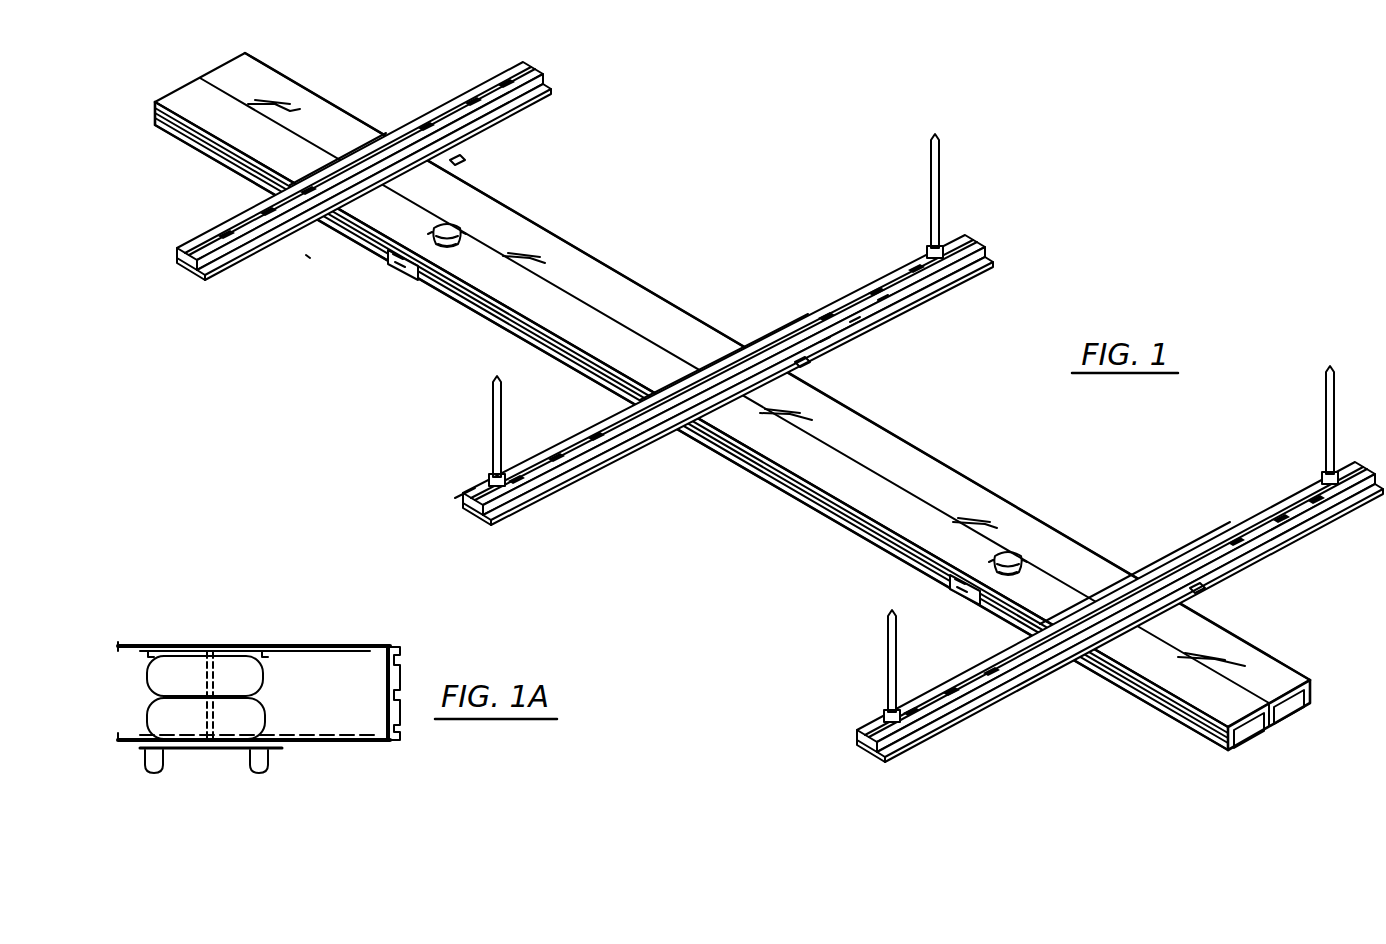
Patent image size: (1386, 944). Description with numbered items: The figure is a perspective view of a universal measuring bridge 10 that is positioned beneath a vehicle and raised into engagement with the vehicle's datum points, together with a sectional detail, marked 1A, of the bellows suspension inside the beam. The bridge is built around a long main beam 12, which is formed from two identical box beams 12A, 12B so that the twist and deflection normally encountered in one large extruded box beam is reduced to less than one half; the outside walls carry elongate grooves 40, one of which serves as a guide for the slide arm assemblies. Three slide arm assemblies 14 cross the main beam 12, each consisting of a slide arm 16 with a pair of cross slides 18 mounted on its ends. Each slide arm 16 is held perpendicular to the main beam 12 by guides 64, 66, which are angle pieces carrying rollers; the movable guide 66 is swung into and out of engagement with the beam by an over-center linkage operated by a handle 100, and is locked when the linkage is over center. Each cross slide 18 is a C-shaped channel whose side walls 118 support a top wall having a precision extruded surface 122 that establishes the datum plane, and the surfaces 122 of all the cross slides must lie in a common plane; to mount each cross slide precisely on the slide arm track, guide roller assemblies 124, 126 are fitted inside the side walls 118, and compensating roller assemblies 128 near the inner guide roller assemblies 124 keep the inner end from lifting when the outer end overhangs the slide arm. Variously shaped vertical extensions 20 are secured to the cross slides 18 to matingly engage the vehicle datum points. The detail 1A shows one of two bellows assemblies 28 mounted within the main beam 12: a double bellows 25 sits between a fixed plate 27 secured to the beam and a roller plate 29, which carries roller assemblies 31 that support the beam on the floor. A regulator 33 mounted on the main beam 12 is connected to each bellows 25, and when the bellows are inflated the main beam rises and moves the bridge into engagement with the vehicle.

In FIG. 1, the universal measuring bridge 10 is at (726, 102).
In FIG. 1, the main beam 12 is at (764, 402).
In FIG. 1, the box beam 12A is at (1240, 662).
In FIG. 1A, the box beam 12A is at (397, 642).
In FIG. 1, the box beam 12B is at (1202, 707).
In FIG. 1A, the box beam 12B is at (168, 647).
In FIG. 1, the slide arm assembly 14 is at (761, 410).
In FIG. 1, the slide arm 16 is at (190, 272).
In FIG. 1, the cross slide 18 is at (486, 77).
In FIG. 1, the vertical extension 20 is at (940, 162).
In FIG. 1A, the double bellows 25 is at (258, 685).
In FIG. 1A, the fixed plate 27 is at (302, 647).
In FIG. 1, the bellows assembly 28 is at (486, 228).
In FIG. 1A, the bellows assembly 28 is at (294, 678).
In FIG. 1A, the roller plate 29 is at (272, 748).
In FIG. 1A, the roller assembly 31 is at (250, 773).
In FIG. 1, the regulator 33 is at (400, 273).
In FIG. 1, the elongate groove 40 is at (1315, 687).
In FIG. 1, the guide 64 is at (460, 162).
In FIG. 1, the movable guide 66 is at (338, 228).
In FIG. 1, the handle 100 is at (242, 270).
In FIG. 1, the side wall 118 is at (458, 498).
In FIG. 1, the precision extruded surface 122 is at (885, 275).
In FIG. 1, the inner guide roller assembly 124 is at (830, 340).
In FIG. 1, the guide roller assembly 126 is at (880, 300).
In FIG. 1, the compensating roller assembly 128 is at (852, 320).
In FIG. 1, the section indicator 1A is at (452, 230).